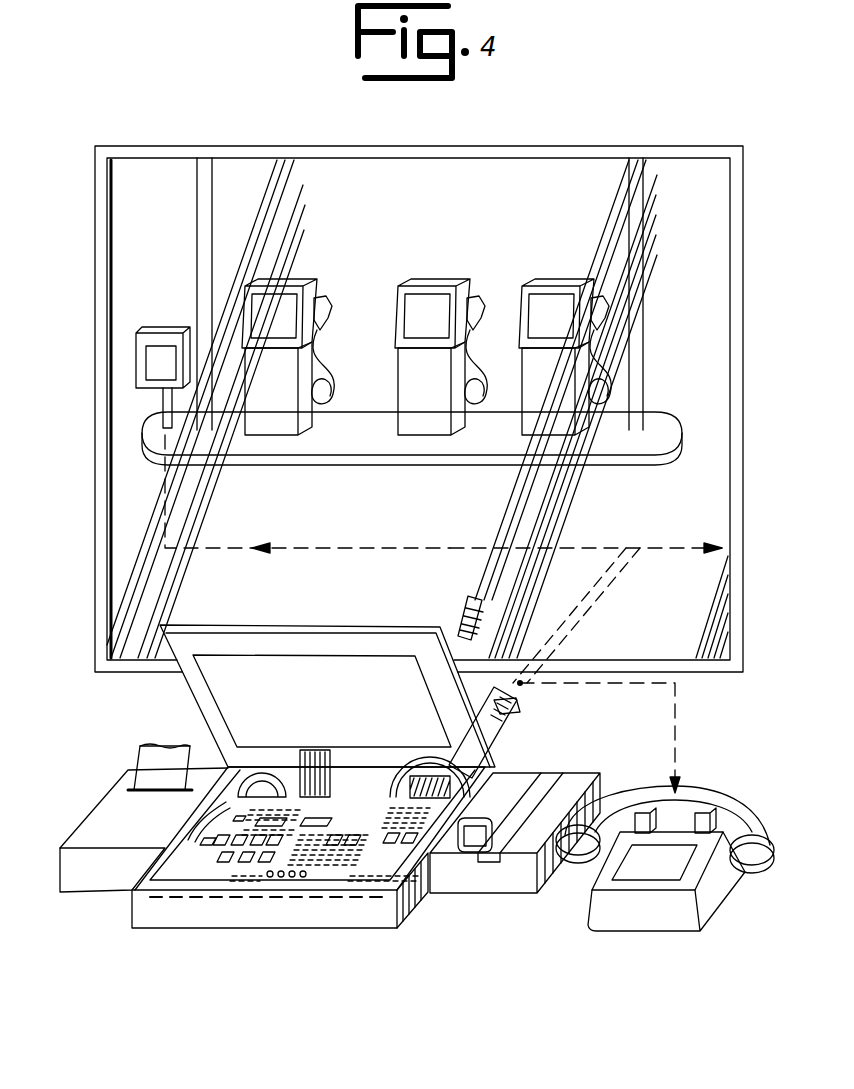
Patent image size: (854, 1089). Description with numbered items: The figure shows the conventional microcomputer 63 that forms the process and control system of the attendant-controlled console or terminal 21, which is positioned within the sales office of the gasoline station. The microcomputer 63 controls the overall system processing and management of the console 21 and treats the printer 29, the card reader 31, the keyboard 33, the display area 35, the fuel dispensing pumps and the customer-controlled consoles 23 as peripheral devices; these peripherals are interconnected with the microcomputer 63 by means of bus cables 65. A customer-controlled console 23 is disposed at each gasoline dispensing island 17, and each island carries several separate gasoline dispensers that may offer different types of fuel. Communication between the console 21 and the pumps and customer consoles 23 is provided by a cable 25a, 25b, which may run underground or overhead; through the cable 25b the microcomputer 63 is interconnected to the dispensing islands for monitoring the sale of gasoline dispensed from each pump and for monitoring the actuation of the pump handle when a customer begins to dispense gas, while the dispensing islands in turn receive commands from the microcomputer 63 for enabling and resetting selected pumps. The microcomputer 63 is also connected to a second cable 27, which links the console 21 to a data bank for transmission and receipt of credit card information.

The gasoline dispensing island 17 is at (347, 412).
The attendant-controlled console 21 is at (420, 945).
The customer-controlled console 23 is at (160, 327).
The cable 25a is at (312, 548).
The cable 25b is at (558, 516).
The second cable 27 is at (597, 610).
The printer 29 is at (104, 882).
The card reader 31 is at (521, 884).
The keyboard 33 is at (200, 708).
The display area 35 is at (514, 745).
The microcomputer 63 is at (160, 890).
The bus cables 65 is at (466, 614).